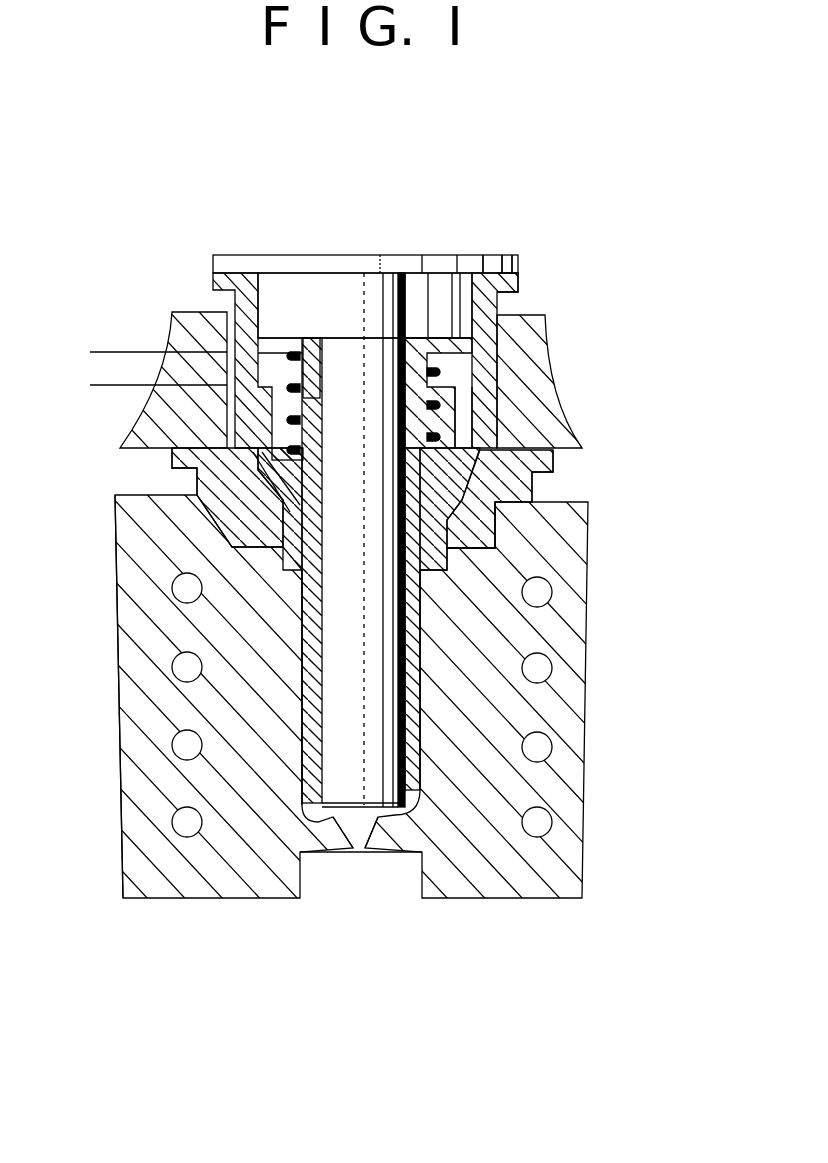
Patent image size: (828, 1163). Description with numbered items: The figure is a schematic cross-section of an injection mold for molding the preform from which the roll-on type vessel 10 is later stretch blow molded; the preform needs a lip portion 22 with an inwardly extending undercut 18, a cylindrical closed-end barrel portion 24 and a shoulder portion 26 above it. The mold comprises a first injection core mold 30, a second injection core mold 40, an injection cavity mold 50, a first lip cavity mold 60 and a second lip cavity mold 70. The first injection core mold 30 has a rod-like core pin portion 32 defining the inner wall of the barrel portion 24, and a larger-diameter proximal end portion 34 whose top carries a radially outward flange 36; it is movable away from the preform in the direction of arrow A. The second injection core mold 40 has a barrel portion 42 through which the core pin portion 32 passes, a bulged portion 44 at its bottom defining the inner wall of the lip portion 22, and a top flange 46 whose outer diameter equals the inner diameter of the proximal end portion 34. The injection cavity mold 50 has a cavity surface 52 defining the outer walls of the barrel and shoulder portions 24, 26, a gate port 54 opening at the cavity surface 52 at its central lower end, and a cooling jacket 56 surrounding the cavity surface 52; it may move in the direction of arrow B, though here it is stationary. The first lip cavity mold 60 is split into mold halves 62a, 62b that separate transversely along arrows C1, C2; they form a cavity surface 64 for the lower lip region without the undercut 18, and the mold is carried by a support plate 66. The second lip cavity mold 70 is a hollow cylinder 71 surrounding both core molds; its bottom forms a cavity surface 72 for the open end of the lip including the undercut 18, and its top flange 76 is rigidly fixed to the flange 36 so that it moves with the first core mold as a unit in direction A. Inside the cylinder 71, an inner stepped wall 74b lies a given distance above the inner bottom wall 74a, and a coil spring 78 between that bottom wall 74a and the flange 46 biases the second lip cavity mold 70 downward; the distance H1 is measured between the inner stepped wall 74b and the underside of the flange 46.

The vessel 10 is at (423, 618).
The undercut 18 is at (272, 507).
The lip portion 22 is at (283, 540).
The barrel portion 24 is at (312, 712).
The shoulder portion 26 is at (300, 580).
The first injection core mold 30 is at (383, 298).
The core pin portion 32 is at (408, 690).
The proximal end portion 34 is at (421, 292).
The flange 36 is at (490, 262).
The second injection core mold 40 is at (530, 378).
The barrel portion 42 is at (470, 422).
The bulged portion 44 is at (445, 505).
The flange 46 is at (468, 348).
The injection cavity mold 50 is at (589, 808).
The cavity surface 52 is at (420, 765).
The gate port 54 is at (347, 838).
The cooling jacket 56 is at (182, 750).
The first lip cavity mold 60 is at (537, 488).
The mold half 62a is at (192, 487).
The mold half 62b is at (565, 447).
The cavity surface 64 is at (447, 538).
The support plate 66 is at (188, 330).
The second lip cavity mold 70 is at (504, 303).
The hollow cylinder 71 is at (245, 305).
The cavity surface 72 is at (272, 452).
The inner bottom wall 74a is at (285, 446).
The inner stepped wall 74b is at (265, 385).
The flange 76 is at (520, 286).
The coil spring 78 is at (440, 405).
The direction of movement A is at (364, 255).
The direction of movement B is at (467, 890).
The transverse direction C1 is at (162, 462).
The transverse direction C2 is at (560, 463).
The distance H1 is at (100, 352).